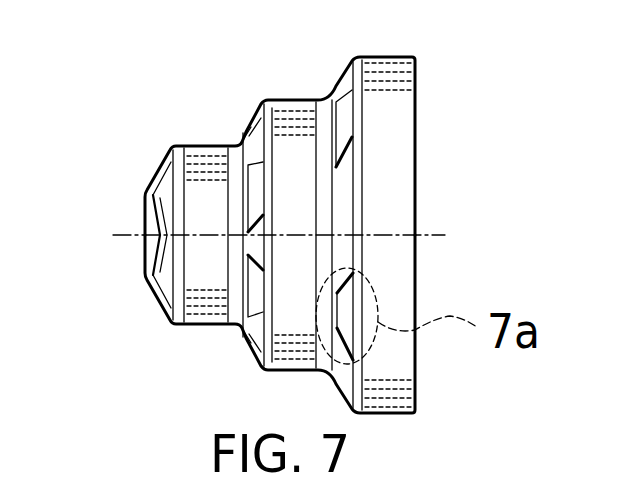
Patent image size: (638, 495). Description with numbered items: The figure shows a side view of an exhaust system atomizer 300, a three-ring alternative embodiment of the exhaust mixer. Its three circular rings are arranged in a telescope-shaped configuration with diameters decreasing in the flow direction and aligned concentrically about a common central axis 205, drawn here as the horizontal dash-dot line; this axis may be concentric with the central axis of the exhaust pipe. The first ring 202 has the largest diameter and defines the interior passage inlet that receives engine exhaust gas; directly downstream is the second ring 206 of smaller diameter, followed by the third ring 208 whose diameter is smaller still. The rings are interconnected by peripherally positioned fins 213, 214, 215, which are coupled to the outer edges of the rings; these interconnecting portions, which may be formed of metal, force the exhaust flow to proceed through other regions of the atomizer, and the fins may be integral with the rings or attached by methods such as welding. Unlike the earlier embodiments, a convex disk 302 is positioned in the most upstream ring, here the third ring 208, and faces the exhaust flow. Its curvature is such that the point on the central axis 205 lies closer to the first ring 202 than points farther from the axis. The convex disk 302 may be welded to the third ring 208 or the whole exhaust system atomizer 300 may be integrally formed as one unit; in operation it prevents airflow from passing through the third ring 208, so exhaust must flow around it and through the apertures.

The exhaust system atomizer 300 is at (465, 73).
The first ring 202 is at (378, 57).
The second ring 206 is at (298, 100).
The third ring 208 is at (210, 145).
The fin 213 is at (343, 177).
The fin 214 is at (254, 154).
The fin 215 is at (164, 175).
The convex disk 302 is at (151, 267).
The central axis 205 is at (130, 234).